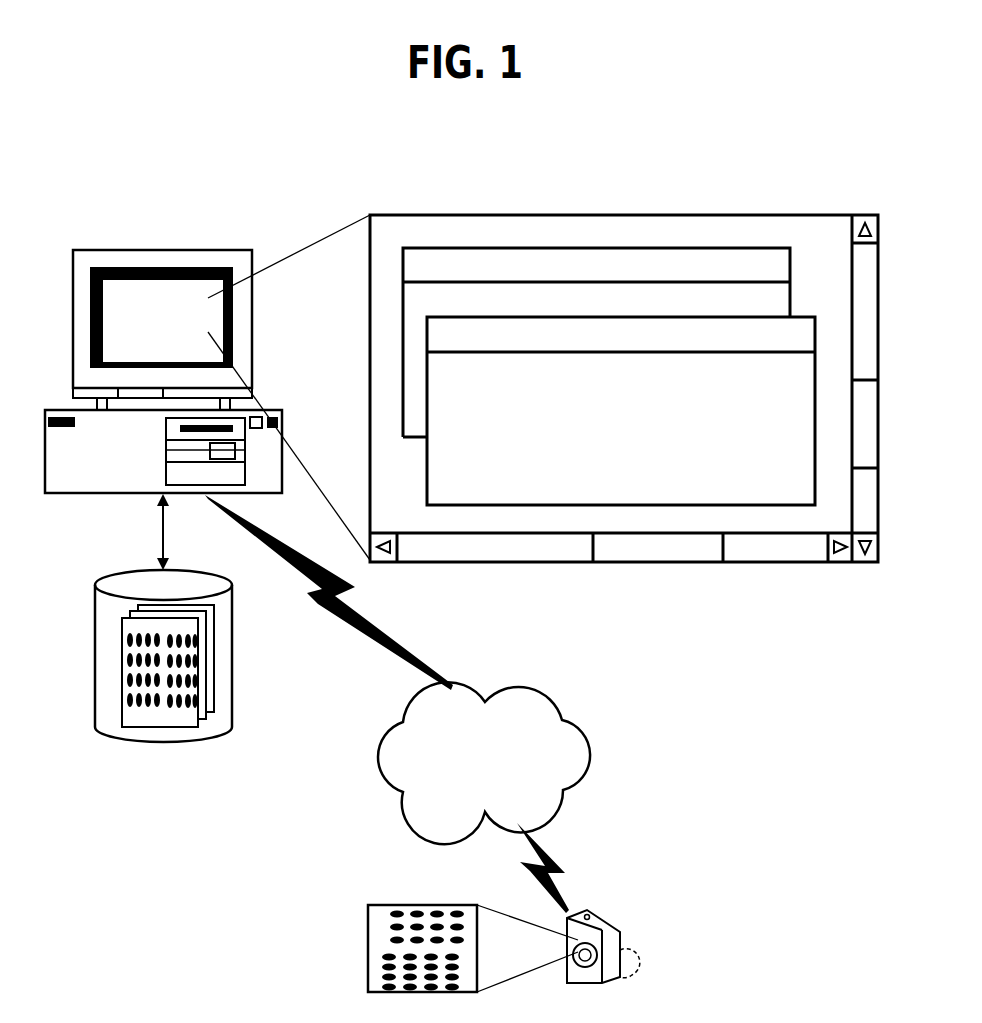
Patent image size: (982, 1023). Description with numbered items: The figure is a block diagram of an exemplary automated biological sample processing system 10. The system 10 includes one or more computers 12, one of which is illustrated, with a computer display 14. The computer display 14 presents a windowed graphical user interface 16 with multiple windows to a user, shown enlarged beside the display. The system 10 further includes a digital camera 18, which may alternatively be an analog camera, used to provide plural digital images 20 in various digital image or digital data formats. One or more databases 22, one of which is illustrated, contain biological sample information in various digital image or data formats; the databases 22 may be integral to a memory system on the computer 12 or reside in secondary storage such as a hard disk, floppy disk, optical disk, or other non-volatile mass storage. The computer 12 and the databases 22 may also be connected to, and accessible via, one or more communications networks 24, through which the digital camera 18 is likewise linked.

The automated biological sample processing system 10 is at (660, 145).
The computer 12 is at (281, 411).
The computer display 14 is at (155, 298).
The windowed graphical user interface 16 is at (627, 547).
The digital camera 18 is at (583, 913).
The digital images 20 is at (367, 950).
The database 22 is at (233, 653).
The communications network 24 is at (517, 687).